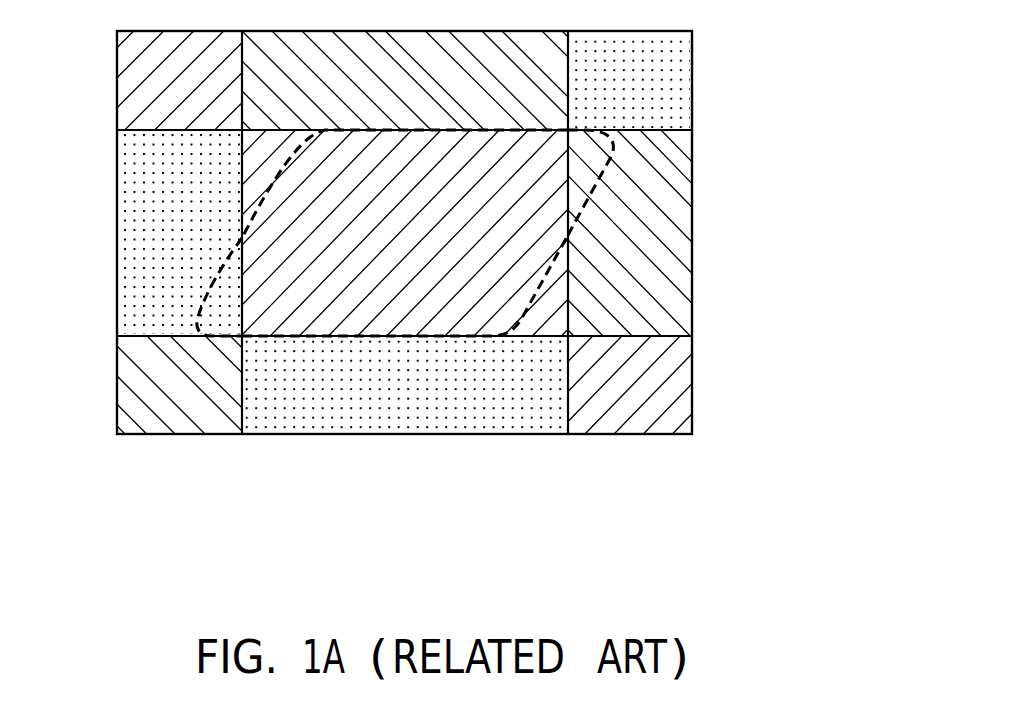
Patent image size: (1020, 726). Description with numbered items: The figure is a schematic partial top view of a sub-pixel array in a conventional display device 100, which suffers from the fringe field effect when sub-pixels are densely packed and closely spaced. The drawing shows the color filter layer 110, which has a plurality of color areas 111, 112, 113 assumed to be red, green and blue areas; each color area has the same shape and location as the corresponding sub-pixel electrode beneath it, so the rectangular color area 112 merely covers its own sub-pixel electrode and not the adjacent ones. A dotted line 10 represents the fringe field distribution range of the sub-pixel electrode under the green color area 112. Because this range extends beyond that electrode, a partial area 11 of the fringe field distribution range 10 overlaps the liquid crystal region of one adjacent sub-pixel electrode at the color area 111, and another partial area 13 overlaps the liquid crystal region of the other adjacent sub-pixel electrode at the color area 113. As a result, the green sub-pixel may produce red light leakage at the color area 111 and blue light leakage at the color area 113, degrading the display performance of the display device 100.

The display device 100 is at (410, 277).
The color filter layer 110 is at (686, 337).
The color area 111 is at (158, 235).
The color area 112 is at (523, 243).
The color area 113 is at (633, 313).
The fringe field distribution range 10 is at (613, 179).
The partial area 11 is at (223, 315).
The partial area 13 is at (585, 152).